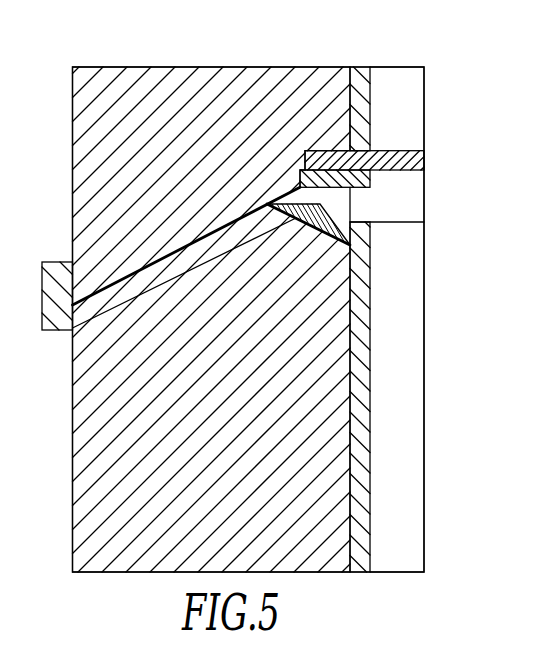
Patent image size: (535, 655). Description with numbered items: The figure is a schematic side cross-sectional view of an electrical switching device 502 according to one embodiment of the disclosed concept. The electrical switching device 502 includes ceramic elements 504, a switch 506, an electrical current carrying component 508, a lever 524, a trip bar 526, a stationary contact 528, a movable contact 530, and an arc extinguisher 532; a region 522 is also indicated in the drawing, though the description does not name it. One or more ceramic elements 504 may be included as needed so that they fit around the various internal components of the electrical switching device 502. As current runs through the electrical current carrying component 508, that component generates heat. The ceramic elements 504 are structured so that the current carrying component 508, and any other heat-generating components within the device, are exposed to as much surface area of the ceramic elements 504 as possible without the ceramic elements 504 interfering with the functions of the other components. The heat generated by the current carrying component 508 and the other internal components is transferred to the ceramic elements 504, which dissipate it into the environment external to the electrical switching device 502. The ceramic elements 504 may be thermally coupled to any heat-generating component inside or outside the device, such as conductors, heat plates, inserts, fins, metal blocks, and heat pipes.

The electrical switching device 502 is at (158, 31).
The ceramic element 504 is at (84, 84).
The switch 506 is at (57, 325).
The electrical current carrying component 508 is at (362, 126).
The cavity 522 is at (383, 72).
The lever 524 is at (103, 298).
The trip bar 526 is at (336, 210).
The stationary contact 528 is at (425, 163).
The movable contact 530 is at (372, 177).
The arc extinguisher 532 is at (424, 236).